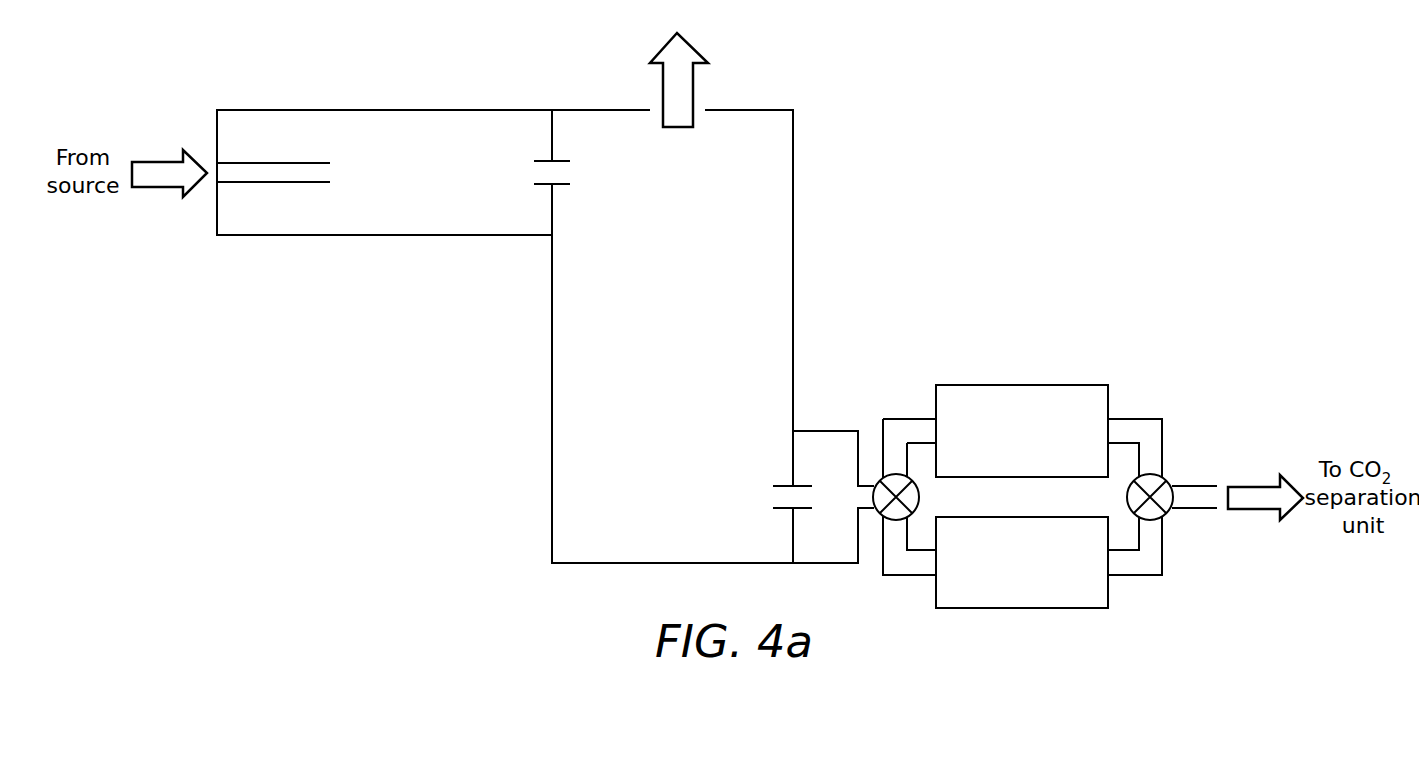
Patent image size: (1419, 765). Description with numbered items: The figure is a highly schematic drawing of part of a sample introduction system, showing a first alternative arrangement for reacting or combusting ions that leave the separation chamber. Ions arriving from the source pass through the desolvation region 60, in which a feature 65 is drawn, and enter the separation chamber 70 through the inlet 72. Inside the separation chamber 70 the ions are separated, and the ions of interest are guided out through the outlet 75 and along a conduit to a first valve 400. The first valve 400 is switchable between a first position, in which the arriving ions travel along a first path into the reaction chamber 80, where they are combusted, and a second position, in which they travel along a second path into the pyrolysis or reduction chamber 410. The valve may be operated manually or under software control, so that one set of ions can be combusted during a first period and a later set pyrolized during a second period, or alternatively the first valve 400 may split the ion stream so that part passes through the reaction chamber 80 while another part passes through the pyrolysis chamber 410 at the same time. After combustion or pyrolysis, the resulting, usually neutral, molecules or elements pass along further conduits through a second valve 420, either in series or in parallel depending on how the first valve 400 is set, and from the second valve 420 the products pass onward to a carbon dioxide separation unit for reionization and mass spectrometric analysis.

The desolvation region 60 is at (373, 118).
The inlet conduit 65 is at (300, 183).
The separation chamber 70 is at (562, 378).
The inlet 72 is at (543, 158).
The outlet 75 is at (782, 483).
The reaction chamber 80 is at (1022, 385).
The first valve 400 is at (920, 497).
The pyrolysis or reduction chamber 410 is at (1022, 608).
The second valve 420 is at (1127, 497).